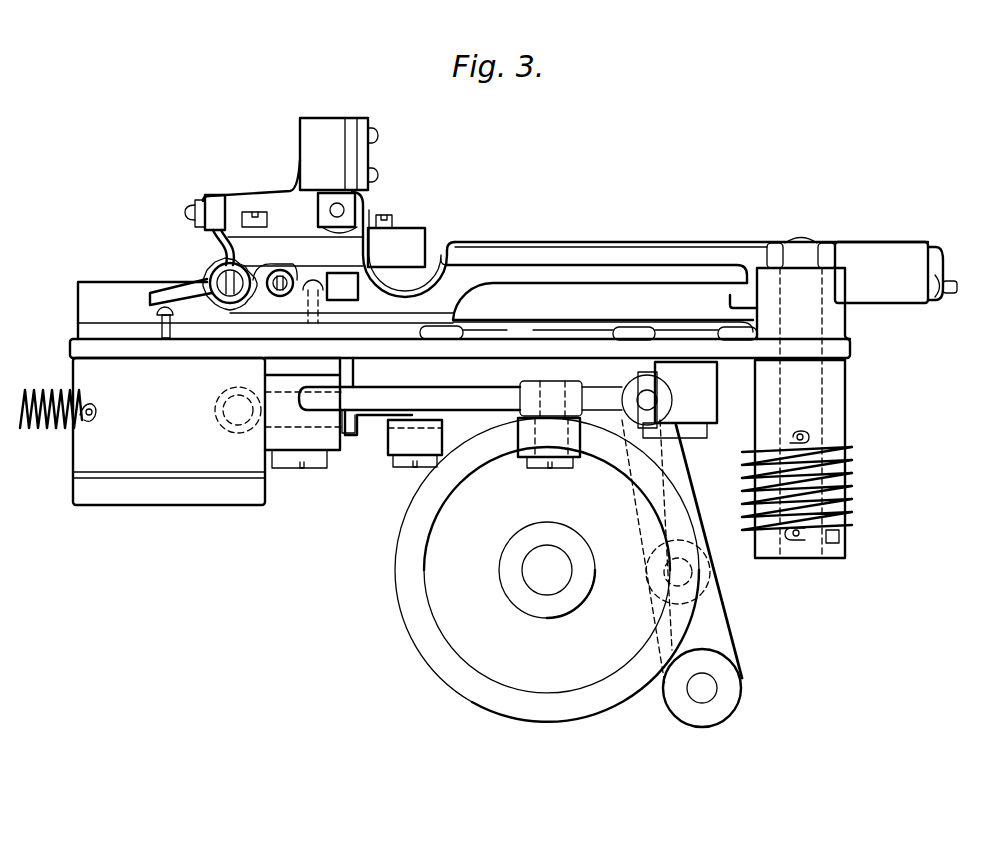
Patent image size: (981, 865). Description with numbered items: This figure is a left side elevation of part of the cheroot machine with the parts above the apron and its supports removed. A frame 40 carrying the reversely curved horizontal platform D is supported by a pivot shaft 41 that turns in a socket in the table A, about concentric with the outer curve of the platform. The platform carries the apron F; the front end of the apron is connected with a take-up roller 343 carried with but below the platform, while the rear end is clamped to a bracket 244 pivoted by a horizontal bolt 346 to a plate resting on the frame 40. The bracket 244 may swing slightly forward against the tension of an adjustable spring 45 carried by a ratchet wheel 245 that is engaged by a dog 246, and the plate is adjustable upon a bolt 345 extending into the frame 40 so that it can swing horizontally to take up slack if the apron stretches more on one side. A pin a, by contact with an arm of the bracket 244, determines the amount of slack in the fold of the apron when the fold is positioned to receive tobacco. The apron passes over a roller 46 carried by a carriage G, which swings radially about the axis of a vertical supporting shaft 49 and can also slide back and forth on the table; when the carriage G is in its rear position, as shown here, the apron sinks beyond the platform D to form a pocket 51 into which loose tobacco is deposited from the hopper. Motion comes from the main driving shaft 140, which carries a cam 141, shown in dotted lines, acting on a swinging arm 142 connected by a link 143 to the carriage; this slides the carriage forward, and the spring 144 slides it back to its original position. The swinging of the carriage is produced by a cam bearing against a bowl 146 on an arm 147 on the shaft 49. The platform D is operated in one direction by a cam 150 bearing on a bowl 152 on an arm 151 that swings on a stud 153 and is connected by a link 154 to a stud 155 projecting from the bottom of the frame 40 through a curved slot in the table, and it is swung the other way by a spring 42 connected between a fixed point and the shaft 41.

The apron F is at (223, 192).
The carriage G is at (359, 197).
The adjustable spring 45 is at (227, 220).
The roller 46 is at (368, 208).
The pivot shaft 41 is at (807, 238).
The platform D is at (687, 262).
The frame 40 is at (492, 294).
The stud 155 is at (677, 333).
The take-up roller 343 is at (931, 303).
The table A is at (852, 352).
The bracket 244 is at (217, 237).
The ratchet wheel 245 is at (207, 270).
The dog 246 is at (270, 272).
The bolt 345 is at (396, 243).
The pocket 51 is at (430, 288).
The pin a is at (153, 317).
The spring 144 is at (33, 383).
The horizontal bolt 346 is at (225, 293).
The arm 151 is at (386, 395).
The link 143 is at (467, 381).
The vertical supporting shaft 49 is at (340, 430).
The arm 147 is at (382, 417).
The stud 153 is at (312, 470).
The bowl 146 is at (430, 447).
The bowl 152 is at (546, 449).
The link 154 is at (684, 449).
The spring 42 is at (850, 507).
The cam 150 is at (397, 568).
The main driving shaft 140 is at (530, 568).
The cam 141 is at (670, 512).
The swinging arm 142 is at (722, 623).